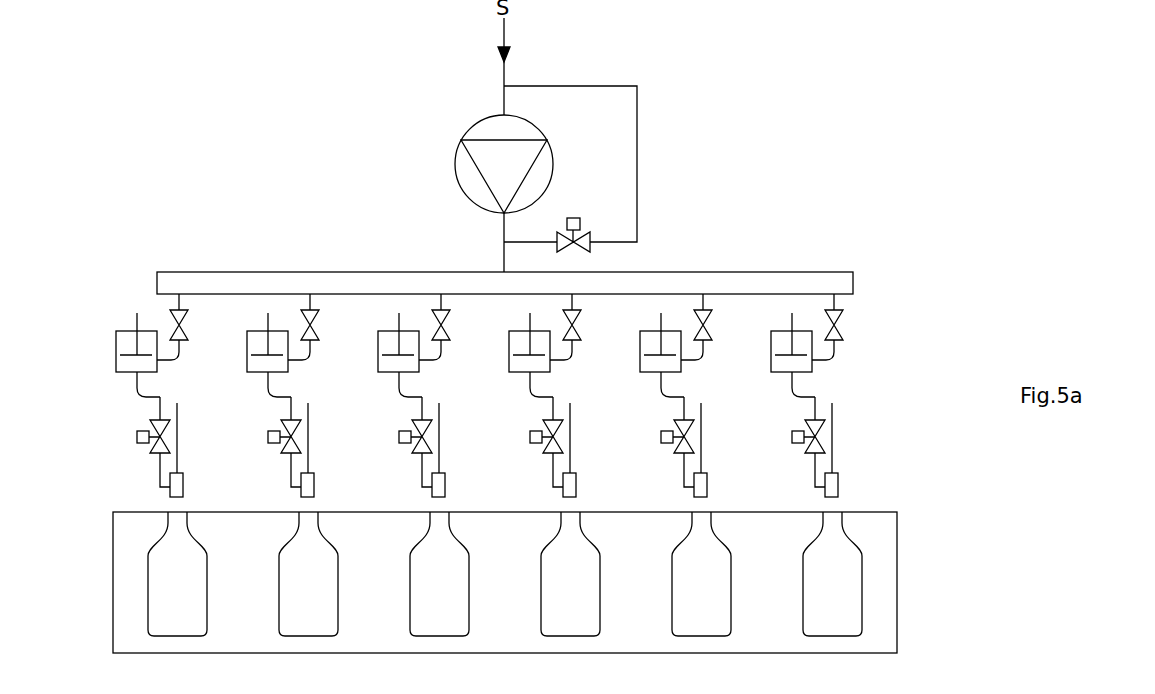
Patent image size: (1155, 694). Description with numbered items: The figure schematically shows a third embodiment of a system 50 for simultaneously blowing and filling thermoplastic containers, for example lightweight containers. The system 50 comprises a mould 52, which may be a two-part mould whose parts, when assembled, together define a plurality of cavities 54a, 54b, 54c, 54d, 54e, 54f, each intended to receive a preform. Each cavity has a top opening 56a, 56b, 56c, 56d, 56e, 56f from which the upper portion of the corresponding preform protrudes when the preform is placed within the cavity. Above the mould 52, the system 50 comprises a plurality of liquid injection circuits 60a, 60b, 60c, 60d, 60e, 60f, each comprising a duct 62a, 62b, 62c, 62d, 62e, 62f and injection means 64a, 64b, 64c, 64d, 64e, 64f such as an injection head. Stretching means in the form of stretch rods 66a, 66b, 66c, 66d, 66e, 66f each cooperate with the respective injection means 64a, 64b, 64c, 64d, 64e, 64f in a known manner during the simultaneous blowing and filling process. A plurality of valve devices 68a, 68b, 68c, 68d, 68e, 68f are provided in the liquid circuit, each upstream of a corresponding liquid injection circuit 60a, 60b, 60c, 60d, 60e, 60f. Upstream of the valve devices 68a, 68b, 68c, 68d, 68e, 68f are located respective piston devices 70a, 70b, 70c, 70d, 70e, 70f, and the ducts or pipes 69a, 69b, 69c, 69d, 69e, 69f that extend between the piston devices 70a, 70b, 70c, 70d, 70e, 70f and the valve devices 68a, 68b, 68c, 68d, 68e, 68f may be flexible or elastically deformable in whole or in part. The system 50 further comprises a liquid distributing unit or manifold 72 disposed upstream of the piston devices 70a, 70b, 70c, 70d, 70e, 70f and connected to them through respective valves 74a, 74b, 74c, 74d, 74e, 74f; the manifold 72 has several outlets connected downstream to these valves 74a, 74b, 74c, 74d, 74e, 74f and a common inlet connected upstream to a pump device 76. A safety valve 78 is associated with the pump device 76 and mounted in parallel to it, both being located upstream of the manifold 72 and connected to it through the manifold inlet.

The system 50 is at (781, 145).
The mould 52 is at (935, 612).
The cavity 54a is at (177, 620).
The cavity 54b is at (308, 620).
The cavity 54c is at (439, 620).
The cavity 54d is at (570, 620).
The cavity 54e is at (701, 620).
The cavity 54f is at (832, 620).
The top opening 56a is at (177, 523).
The top opening 56b is at (309, 520).
The top opening 56c is at (440, 520).
The top opening 56d is at (571, 520).
The top opening 56e is at (702, 520).
The top opening 56f is at (836, 520).
The liquid injection circuit 60a is at (143, 445).
The liquid injection circuit 60b is at (297, 482).
The liquid injection circuit 60c is at (427, 482).
The liquid injection circuit 60d is at (559, 482).
The liquid injection circuit 60e is at (690, 482).
The liquid injection circuit 60f is at (819, 482).
The duct 62a is at (158, 470).
The duct 62b is at (289, 470).
The duct 62c is at (420, 470).
The duct 62d is at (551, 470).
The duct 62e is at (682, 470).
The duct 62f is at (813, 470).
The injection means 64a is at (183, 487).
The injection means 64b is at (314, 487).
The injection means 64c is at (445, 487).
The injection means 64d is at (576, 487).
The injection means 64e is at (707, 487).
The injection means 64f is at (838, 487).
The stretch rod 66a is at (178, 426).
The stretch rod 66b is at (309, 426).
The stretch rod 66c is at (440, 426).
The stretch rod 66d is at (571, 426).
The stretch rod 66e is at (702, 426).
The stretch rod 66f is at (833, 426).
The valve device 68a is at (150, 423).
The valve device 68b is at (281, 423).
The valve device 68c is at (412, 423).
The valve device 68d is at (543, 423).
The valve device 68e is at (674, 423).
The valve device 68f is at (805, 423).
The duct or pipe 69a is at (160, 395).
The duct or pipe 69b is at (291, 395).
The duct or pipe 69c is at (422, 395).
The duct or pipe 69d is at (553, 395).
The duct or pipe 69e is at (684, 395).
The duct or pipe 69f is at (815, 395).
The piston device 70a is at (116, 352).
The piston device 70b is at (247, 360).
The piston device 70c is at (378, 360).
The piston device 70d is at (509, 360).
The piston device 70e is at (640, 360).
The piston device 70f is at (771, 360).
The manifold 72 is at (855, 283).
The valve 74a is at (171, 323).
The valve 74b is at (320, 334).
The valve 74c is at (451, 334).
The valve 74d is at (582, 334).
The valve 74e is at (713, 334).
The valve 74f is at (844, 334).
The pump device 76 is at (430, 170).
The safety valve 78 is at (581, 232).